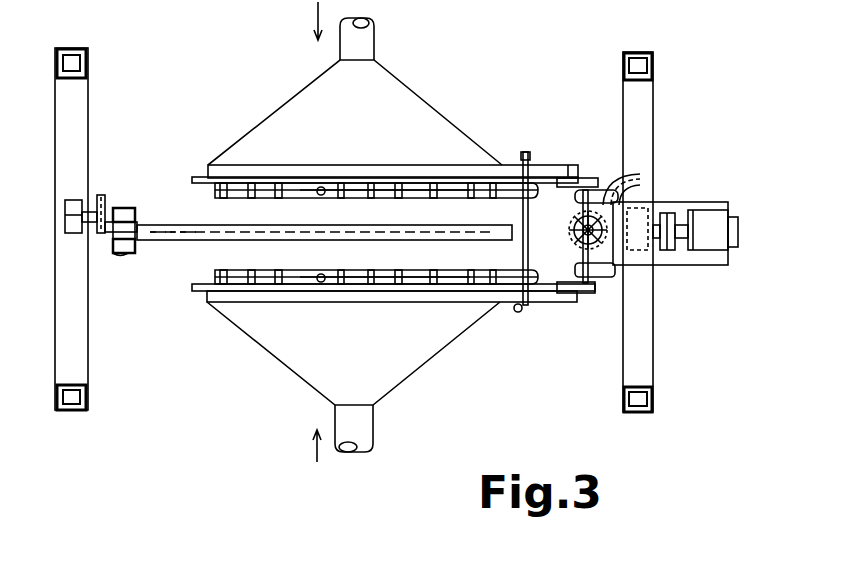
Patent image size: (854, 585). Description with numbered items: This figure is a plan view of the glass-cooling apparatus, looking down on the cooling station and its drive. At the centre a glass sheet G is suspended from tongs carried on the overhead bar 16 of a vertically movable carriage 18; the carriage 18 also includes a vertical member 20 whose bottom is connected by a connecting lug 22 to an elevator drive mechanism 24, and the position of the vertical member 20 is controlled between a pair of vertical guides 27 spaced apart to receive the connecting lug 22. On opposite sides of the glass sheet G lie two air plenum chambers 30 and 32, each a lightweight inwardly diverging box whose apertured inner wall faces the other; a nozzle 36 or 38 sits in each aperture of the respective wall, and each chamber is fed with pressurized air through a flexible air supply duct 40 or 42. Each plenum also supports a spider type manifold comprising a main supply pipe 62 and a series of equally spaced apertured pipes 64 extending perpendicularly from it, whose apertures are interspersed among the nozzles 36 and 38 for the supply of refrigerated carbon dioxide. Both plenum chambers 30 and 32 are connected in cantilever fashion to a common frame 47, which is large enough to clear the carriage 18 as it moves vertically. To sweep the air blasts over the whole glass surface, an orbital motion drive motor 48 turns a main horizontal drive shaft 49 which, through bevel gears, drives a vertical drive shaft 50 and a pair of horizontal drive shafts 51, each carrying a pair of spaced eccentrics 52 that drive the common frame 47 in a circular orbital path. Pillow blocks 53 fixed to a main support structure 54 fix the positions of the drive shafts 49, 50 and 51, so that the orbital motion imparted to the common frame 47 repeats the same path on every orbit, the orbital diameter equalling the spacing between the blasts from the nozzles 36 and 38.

The overhead bar 16 is at (212, 236).
The vertically movable carriage 18 is at (146, 195).
The vertical member 20 is at (140, 227).
The connecting lug 22 is at (118, 245).
The elevator drive mechanism 24 is at (110, 195).
The vertical guides 27 is at (130, 253).
The air plenum chamber 30 is at (372, 388).
The air plenum chamber 32 is at (372, 101).
The nozzle 36 is at (265, 284).
The nozzle 38 is at (428, 182).
The flexible air supply duct 40 is at (375, 428).
The flexible air supply duct 42 is at (375, 38).
The common frame 47 is at (533, 150).
The orbital motion drive motor 48 is at (730, 232).
The main horizontal drive shaft 49 is at (688, 265).
The vertical drive shaft 50 is at (568, 232).
The horizontal drive shafts 51 is at (580, 252).
The eccentrics 52 is at (580, 177).
The pillow blocks 53 is at (640, 174).
The main support structure 54 is at (88, 62).
The main supply pipe 62 is at (321, 186).
The apertured pipes 64 is at (388, 194).
The glass sheet G is at (268, 226).